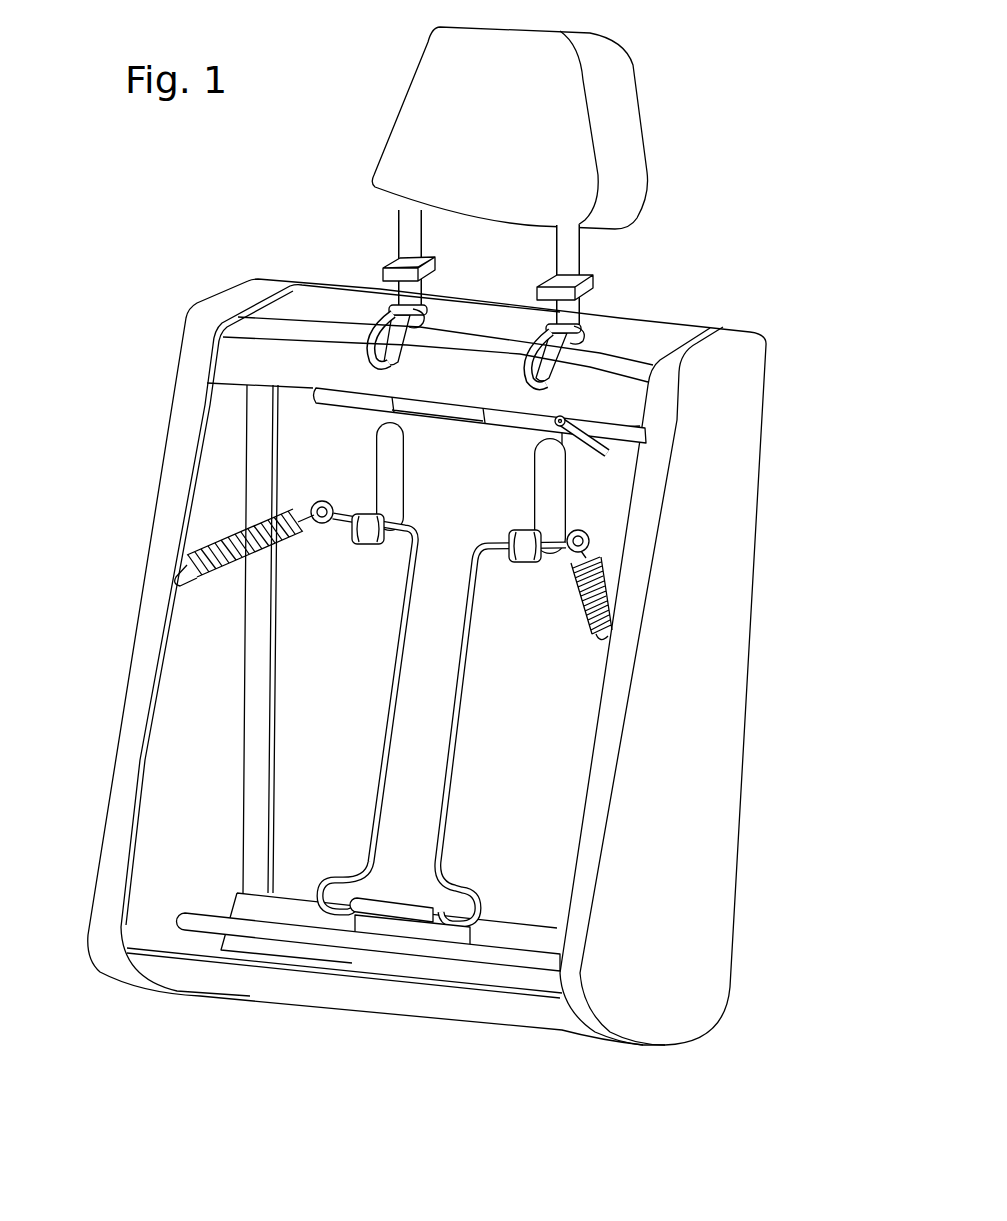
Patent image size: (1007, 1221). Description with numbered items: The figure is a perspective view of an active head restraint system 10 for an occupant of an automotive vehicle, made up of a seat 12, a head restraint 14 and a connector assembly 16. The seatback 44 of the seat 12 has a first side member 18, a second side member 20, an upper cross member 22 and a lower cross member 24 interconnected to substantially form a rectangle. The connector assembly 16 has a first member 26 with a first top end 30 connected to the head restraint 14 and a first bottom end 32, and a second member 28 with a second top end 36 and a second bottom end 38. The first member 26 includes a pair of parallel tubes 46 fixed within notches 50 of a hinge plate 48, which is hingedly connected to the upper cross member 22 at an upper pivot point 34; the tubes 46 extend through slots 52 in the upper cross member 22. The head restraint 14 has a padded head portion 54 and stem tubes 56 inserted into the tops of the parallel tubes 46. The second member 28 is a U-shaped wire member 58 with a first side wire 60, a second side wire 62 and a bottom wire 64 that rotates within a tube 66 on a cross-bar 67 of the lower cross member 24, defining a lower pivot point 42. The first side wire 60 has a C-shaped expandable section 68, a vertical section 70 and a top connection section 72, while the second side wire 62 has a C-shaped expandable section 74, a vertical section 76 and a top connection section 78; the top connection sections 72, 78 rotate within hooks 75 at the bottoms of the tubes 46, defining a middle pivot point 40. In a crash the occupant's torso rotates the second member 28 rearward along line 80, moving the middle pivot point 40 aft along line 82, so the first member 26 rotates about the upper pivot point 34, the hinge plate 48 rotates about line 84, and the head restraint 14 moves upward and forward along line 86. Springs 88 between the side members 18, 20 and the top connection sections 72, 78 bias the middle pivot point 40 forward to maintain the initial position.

The active head restraint system 10 is at (104, 355).
The seat 12 is at (763, 611).
The head restraint 14 is at (662, 191).
The connector assembly 16 is at (569, 485).
The first side member 18 is at (152, 470).
The second side member 20 is at (768, 483).
The upper cross member 22 is at (344, 284).
The lower cross member 24 is at (295, 918).
The first member 26 is at (365, 486).
The second member 28 is at (380, 702).
The first top end 30 is at (584, 303).
The first bottom end 32 is at (358, 507).
The upper pivot point 34 is at (318, 384).
The second top end 36 is at (470, 542).
The second bottom end 38 is at (478, 933).
The middle pivot point 40 is at (354, 554).
The lower pivot point 42 is at (388, 898).
The seatback 44 is at (118, 660).
The parallel tubes 46 is at (372, 424).
The hinge plate 48 is at (528, 441).
The notches 50 is at (520, 437).
The slots 52 is at (412, 328).
The padded head portion 54 is at (430, 90).
The stem tubes 56 is at (416, 238).
The U-shaped wire member 58 is at (463, 768).
The first side wire 60 is at (373, 762).
The second side wire 62 is at (459, 823).
The bottom wire 64 is at (331, 917).
The tube 66 is at (420, 917).
The cross-bar 67 is at (260, 930).
The C-shaped expandable section 68 is at (332, 875).
The vertical section 70 is at (378, 750).
The top connection section 72 is at (388, 553).
The C-shaped expandable section 74 is at (480, 893).
The hooks 75 is at (522, 532).
The vertical section 76 is at (463, 695).
The top connection section 78 is at (560, 528).
The line 80 is at (510, 593).
The line 82 is at (617, 530).
The line 84 is at (613, 432).
The line 86 is at (420, 126).
The springs 88 is at (200, 548).